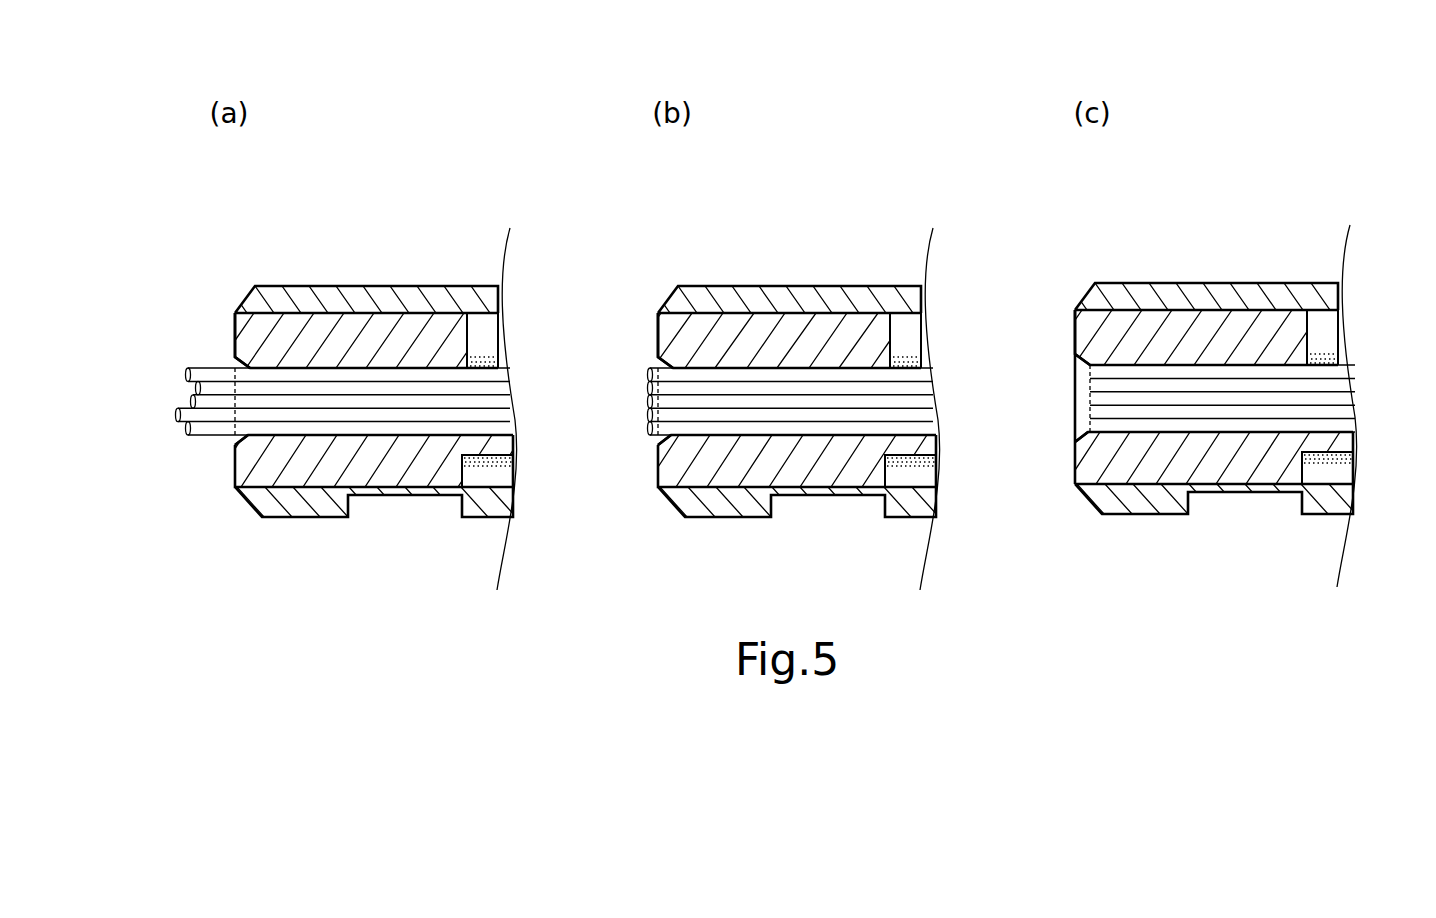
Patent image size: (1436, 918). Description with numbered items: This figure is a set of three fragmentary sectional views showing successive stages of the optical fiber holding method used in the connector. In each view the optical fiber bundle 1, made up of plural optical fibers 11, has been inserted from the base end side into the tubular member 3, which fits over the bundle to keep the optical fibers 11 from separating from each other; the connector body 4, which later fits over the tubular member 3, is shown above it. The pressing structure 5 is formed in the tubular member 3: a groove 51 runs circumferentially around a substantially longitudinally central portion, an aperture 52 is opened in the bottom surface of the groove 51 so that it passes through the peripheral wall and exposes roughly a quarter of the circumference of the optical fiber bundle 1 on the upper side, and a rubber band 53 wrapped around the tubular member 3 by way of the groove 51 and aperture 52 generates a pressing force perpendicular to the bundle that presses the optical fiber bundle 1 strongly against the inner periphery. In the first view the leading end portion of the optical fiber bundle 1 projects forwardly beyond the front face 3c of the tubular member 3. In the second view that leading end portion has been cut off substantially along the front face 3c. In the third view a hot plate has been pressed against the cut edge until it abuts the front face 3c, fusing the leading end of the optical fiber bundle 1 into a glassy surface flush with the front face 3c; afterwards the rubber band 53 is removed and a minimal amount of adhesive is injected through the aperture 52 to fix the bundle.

The optical fiber bundle 1 is at (192, 390).
The tubular member 3 is at (233, 473).
The front face 3c is at (235, 457).
The connector body 4 is at (374, 283).
The pressing structure 5 is at (483, 338).
The optical fibers 11 is at (258, 372).
The groove 51 is at (497, 470).
The aperture 52 is at (488, 363).
The rubber band 53 is at (512, 463).